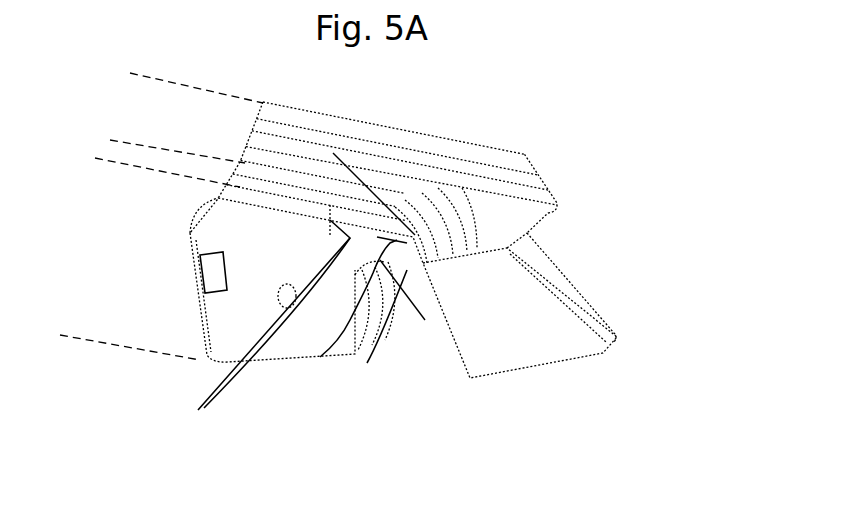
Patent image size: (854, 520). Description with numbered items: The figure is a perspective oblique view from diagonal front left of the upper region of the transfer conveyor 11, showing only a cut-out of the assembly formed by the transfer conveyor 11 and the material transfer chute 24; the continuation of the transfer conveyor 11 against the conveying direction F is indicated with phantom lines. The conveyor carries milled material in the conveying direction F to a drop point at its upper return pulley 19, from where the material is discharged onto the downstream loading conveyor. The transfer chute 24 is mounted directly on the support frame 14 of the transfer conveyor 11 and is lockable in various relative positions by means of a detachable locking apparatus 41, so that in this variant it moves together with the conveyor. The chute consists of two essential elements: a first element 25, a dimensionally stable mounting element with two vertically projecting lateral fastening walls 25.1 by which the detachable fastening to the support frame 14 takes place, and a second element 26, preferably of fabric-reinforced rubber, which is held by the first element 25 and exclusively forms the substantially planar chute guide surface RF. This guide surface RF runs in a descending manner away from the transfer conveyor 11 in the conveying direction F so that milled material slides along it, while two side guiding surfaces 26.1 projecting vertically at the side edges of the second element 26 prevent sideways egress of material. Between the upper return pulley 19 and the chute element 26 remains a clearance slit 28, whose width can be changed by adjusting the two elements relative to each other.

The transfer conveyor 11 is at (187, 243).
The support frame 14 is at (187, 278).
The upper return pulley 19 is at (320, 357).
The material transfer chute 24 is at (605, 305).
The first element 25 is at (407, 270).
The lateral fastening walls 25.1 is at (367, 363).
The second element 26 is at (487, 353).
The side guiding surfaces 26.1 is at (590, 300).
The clearance slit 28 is at (487, 252).
The detachable locking apparatus 41 is at (547, 210).
The chute guide surface RF is at (530, 340).
The conveying direction F is at (370, 90).